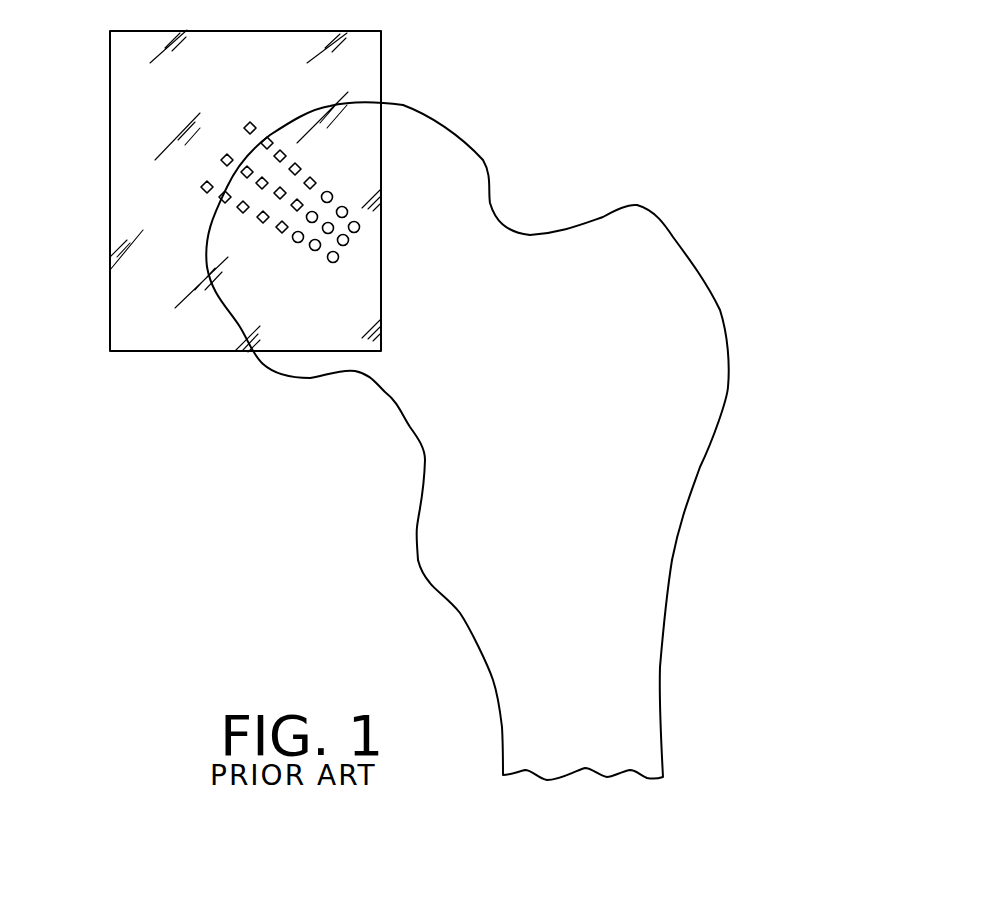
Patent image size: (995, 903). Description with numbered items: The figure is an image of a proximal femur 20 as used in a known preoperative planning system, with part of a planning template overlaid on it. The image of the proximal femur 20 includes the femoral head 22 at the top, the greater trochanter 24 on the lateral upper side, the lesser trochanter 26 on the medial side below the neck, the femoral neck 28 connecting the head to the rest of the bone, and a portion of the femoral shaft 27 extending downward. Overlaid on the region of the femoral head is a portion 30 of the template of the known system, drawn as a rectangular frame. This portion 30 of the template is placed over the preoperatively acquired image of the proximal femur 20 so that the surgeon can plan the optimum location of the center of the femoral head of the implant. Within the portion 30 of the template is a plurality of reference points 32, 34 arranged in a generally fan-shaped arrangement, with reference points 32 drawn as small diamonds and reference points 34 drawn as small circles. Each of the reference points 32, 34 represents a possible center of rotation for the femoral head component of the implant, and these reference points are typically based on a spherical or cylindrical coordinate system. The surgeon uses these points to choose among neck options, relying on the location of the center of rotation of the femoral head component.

The proximal femur 20 is at (511, 419).
The femoral head 22 is at (392, 112).
The greater trochanter 24 is at (705, 278).
The lesser trochanter 26 is at (417, 562).
The femoral shaft 27 is at (515, 738).
The femoral neck 28 is at (510, 225).
The portion of a template 30 is at (125, 302).
The reference points 32 is at (224, 160).
The reference points 34 is at (328, 192).